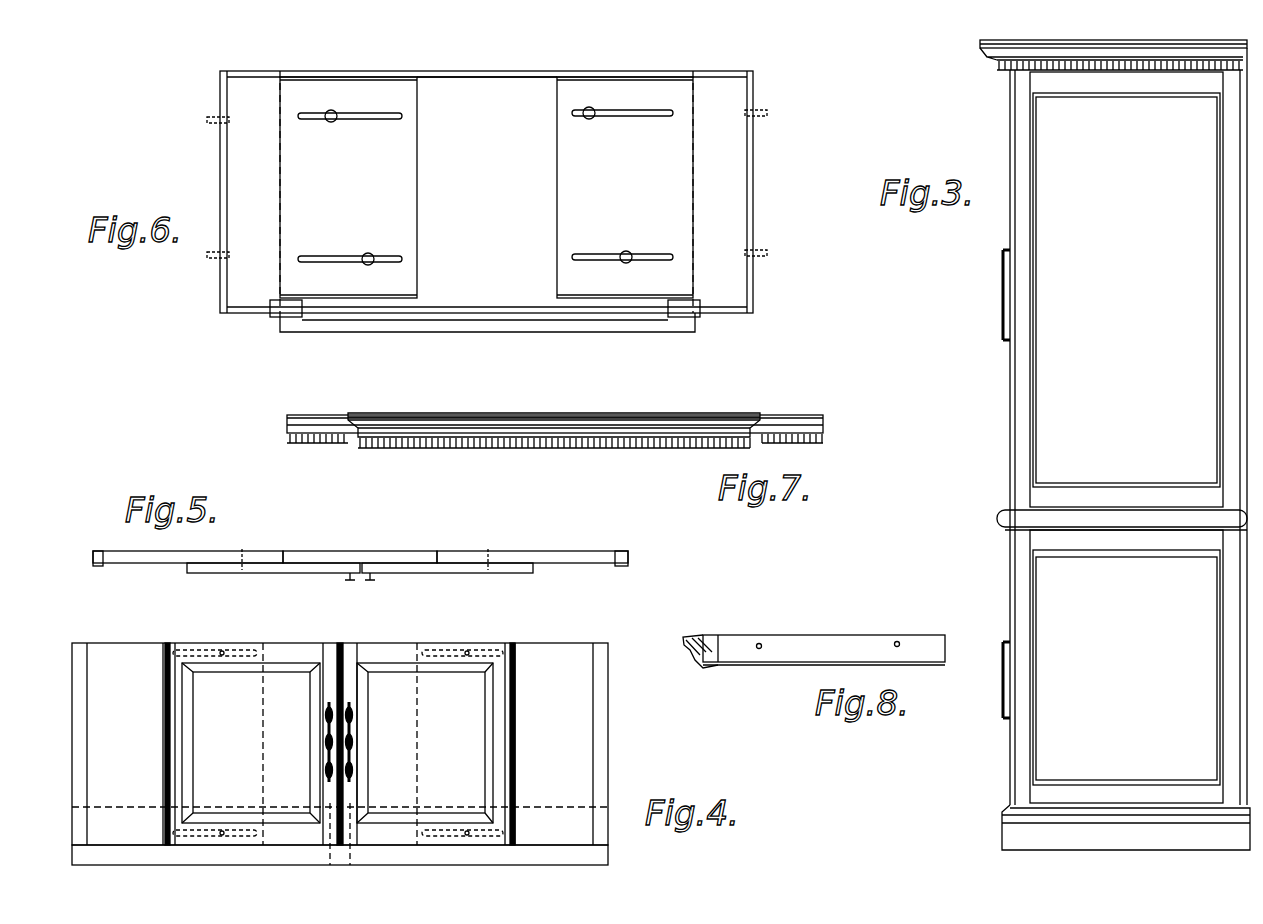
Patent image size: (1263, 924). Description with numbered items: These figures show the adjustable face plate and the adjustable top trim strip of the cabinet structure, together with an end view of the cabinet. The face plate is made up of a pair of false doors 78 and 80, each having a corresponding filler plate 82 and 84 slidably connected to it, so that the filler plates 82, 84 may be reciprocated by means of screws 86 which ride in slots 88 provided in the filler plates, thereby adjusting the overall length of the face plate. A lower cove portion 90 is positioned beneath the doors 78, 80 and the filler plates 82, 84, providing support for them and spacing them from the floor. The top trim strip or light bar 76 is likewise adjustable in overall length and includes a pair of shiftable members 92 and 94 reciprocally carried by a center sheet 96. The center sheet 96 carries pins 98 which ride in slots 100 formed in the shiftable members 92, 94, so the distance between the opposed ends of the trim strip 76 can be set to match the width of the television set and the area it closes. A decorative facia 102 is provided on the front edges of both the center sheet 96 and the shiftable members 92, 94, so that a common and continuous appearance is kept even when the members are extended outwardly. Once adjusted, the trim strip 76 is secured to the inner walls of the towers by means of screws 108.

In FIG. 6, the top trim strip 76 is at (765, 197).
In FIG. 7, the top trim strip 76 is at (545, 455).
In FIG. 8, the top trim strip 76 is at (790, 630).
In FIG. 5, the false door 78 is at (277, 568).
In FIG. 4, the false door 78 is at (254, 744).
In FIG. 5, the false door 80 is at (405, 568).
In FIG. 4, the false door 80 is at (436, 744).
In FIG. 5, the filler plate 82 is at (170, 565).
In FIG. 4, the filler plate 82 is at (125, 744).
In FIG. 5, the filler plate 84 is at (560, 558).
In FIG. 4, the filler plate 84 is at (554, 744).
In FIG. 5, the screw 86 is at (243, 550).
In FIG. 4, the screw 86 is at (226, 652).
In FIG. 5, the slot 88 is at (360, 557).
In FIG. 4, the slot 88 is at (243, 653).
In FIG. 5, the lower cove portion 90 is at (360, 576).
In FIG. 4, the lower cove portion 90 is at (578, 851).
In FIG. 6, the shiftable member 92 is at (348, 187).
In FIG. 6, the shiftable member 94 is at (625, 187).
In FIG. 6, the center sheet 96 is at (487, 142).
In FIG. 6, the pin 98 is at (331, 123).
In FIG. 6, the slot 100 is at (371, 119).
In FIG. 7, the decorative facia 102 is at (410, 428).
In FIG. 8, the decorative facia 102 is at (700, 662).
In FIG. 6, the screw 108 is at (210, 120).